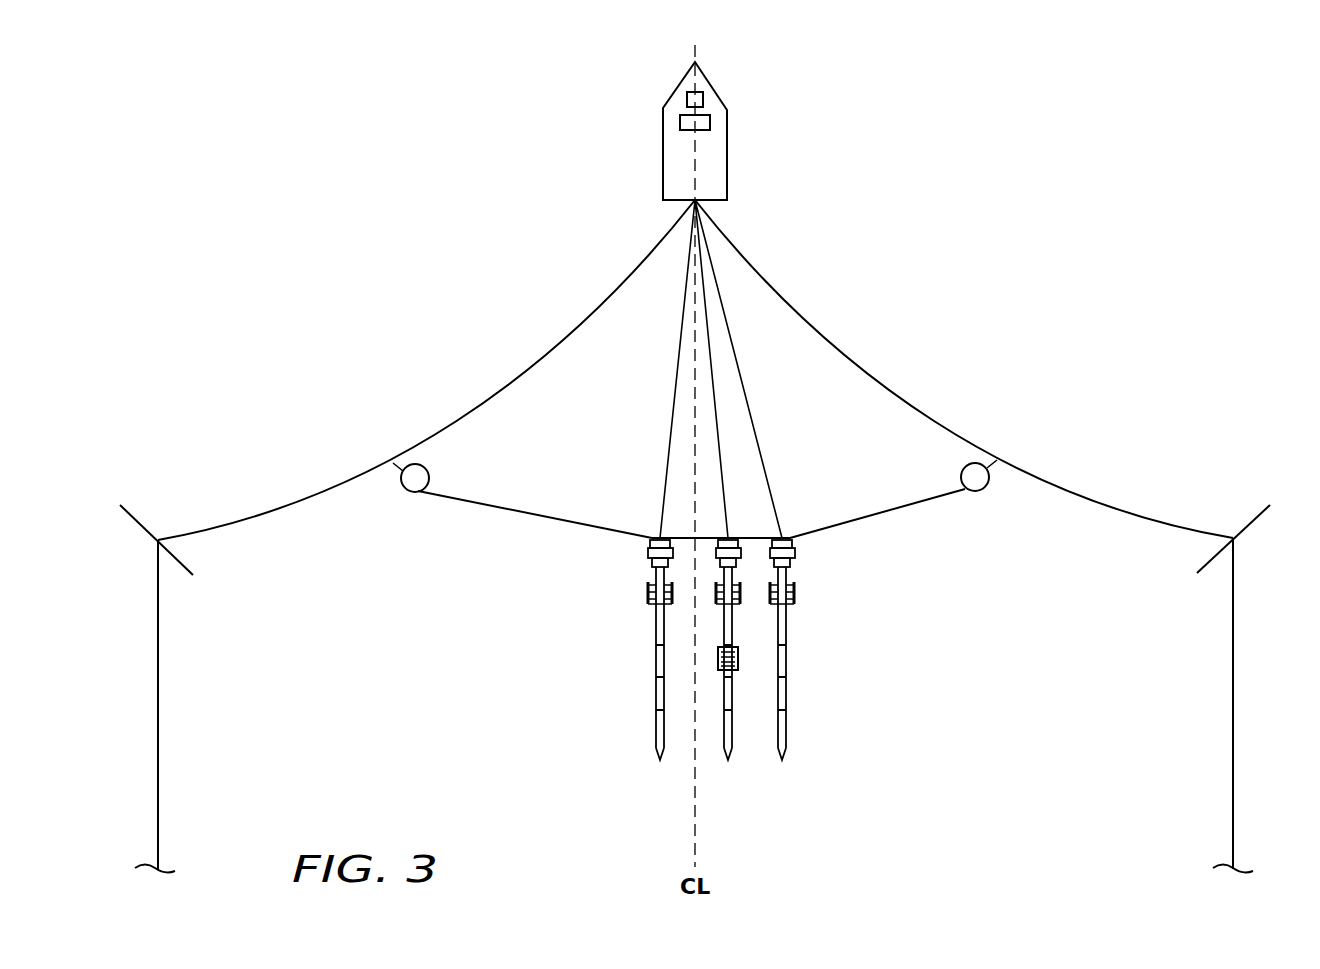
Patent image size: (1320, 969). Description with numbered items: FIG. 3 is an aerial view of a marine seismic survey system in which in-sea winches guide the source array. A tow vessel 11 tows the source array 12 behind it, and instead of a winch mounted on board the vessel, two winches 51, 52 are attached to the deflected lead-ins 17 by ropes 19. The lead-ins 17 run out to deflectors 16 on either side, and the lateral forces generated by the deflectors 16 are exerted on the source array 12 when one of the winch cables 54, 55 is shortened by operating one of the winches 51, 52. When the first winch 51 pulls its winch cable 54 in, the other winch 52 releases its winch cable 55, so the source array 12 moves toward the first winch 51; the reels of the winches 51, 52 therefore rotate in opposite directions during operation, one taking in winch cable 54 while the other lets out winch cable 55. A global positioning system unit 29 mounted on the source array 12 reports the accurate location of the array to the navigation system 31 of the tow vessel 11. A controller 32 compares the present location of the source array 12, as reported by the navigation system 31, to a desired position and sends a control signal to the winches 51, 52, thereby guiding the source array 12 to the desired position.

The tow vessel 11 is at (678, 85).
The navigation system 31 is at (703, 98).
The controller 32 is at (710, 121).
The source array 12 is at (690, 792).
The deflectors 16 is at (132, 512).
The deflected lead-ins 17 is at (305, 497).
The ropes 19 is at (393, 466).
The first winch 51 is at (431, 475).
The second winch 52 is at (960, 473).
The winch cable 54 is at (452, 500).
The winch cable 55 is at (950, 497).
The global positioning system (GPS) unit 29 is at (740, 660).